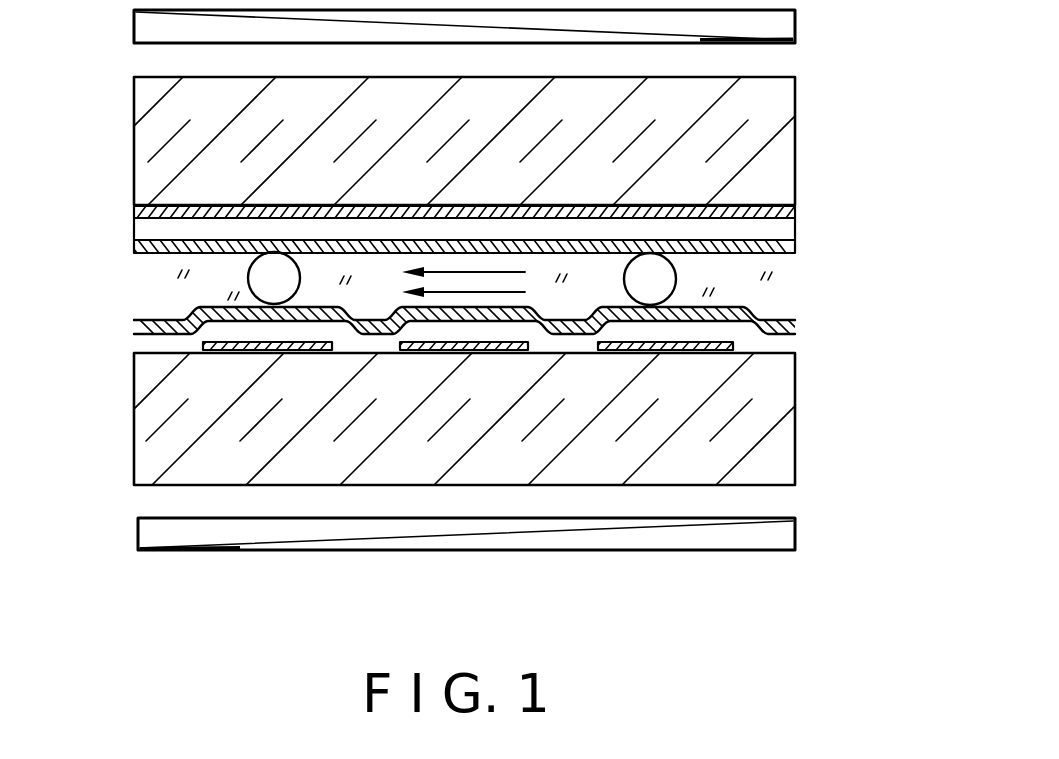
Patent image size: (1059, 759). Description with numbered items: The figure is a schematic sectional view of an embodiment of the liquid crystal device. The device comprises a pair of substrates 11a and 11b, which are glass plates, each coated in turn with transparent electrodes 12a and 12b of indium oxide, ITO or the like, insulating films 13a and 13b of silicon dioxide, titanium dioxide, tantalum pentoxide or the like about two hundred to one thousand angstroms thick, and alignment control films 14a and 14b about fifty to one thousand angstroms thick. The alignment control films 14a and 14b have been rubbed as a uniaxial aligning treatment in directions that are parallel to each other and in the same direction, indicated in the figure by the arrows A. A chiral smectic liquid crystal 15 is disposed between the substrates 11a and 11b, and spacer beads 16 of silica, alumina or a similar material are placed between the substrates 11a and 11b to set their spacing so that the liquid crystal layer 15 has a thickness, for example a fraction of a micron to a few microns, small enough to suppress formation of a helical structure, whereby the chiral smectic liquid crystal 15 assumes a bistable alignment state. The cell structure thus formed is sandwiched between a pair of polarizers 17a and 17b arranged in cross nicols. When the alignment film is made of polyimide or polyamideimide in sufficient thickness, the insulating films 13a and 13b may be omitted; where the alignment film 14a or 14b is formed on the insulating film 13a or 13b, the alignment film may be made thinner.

The substrate 11a is at (795, 153).
The substrate 11b is at (795, 441).
The transparent electrode 12a is at (795, 213).
The transparent electrode 12b is at (200, 346).
The insulating film 13a is at (795, 228).
The insulating film 13b is at (795, 346).
The alignment control film 14a is at (795, 245).
The alignment control film 14b is at (795, 328).
The chiral smectic liquid crystal 15 is at (795, 300).
The spacer beads 16 is at (248, 270).
The polarizer 17a is at (134, 30).
The polarizer 17b is at (138, 530).